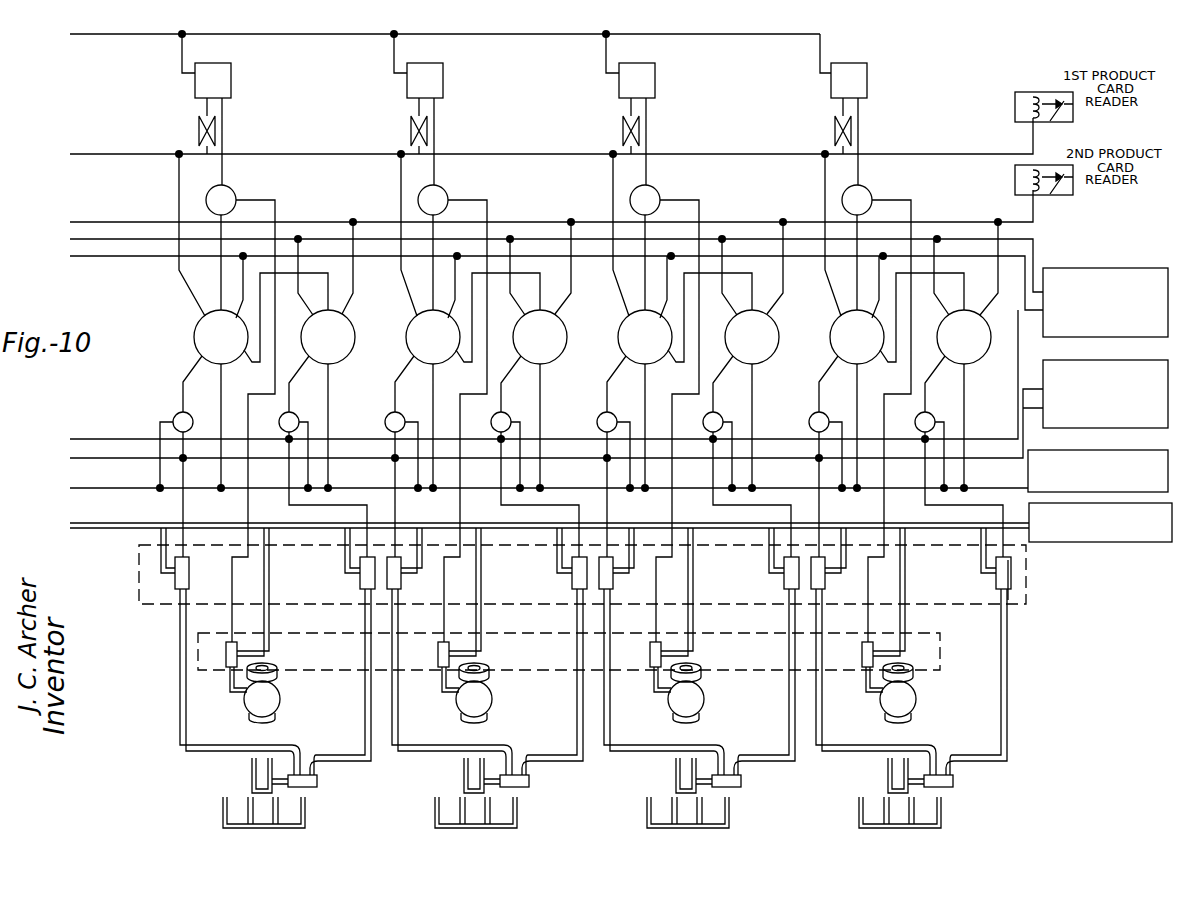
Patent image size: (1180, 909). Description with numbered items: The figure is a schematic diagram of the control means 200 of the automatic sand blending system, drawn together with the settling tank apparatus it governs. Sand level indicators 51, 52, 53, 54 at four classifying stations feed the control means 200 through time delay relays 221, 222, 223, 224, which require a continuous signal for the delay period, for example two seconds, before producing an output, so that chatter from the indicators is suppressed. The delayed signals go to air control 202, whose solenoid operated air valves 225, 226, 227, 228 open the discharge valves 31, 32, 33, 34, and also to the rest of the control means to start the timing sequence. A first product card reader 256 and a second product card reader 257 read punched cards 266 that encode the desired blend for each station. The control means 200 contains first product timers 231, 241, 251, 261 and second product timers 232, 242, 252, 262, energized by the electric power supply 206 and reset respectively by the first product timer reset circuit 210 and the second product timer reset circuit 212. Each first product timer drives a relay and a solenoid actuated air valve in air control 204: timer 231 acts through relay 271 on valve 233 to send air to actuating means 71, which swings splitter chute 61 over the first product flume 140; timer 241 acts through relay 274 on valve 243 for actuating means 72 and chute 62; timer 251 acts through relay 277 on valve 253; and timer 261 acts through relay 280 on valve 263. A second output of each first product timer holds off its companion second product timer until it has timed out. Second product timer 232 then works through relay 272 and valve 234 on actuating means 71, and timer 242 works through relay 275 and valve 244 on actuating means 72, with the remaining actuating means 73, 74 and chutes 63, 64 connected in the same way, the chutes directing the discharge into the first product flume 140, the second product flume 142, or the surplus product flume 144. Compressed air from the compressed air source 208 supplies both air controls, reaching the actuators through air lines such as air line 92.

The discharge valve 31 is at (915, 693).
The discharge valve 32 is at (702, 693).
The discharge valve 33 is at (490, 693).
The discharge valve 34 is at (272, 698).
The sand level indicator 51 is at (867, 80).
The sand level indicator 52 is at (655, 80).
The sand level indicator 53 is at (443, 80).
The sand level indicator 54 is at (222, 78).
The splitter chute 61 is at (883, 775).
The splitter chute 62 is at (669, 775).
The splitter chute 63 is at (457, 775).
The splitter chute 64 is at (252, 768).
The actuating means 71 is at (958, 779).
The actuating means 72 is at (743, 779).
The actuating means 73 is at (531, 779).
The actuating means 74 is at (317, 782).
The air line 92 is at (1024, 616).
The first product flume 140 is at (966, 803).
The second product flume 142 is at (958, 820).
The surplus product flume 144 is at (890, 803).
The control means 200 is at (180, 345).
The air control 202 is at (940, 658).
The air control 204 is at (1034, 597).
The electric power supply 206 is at (1118, 449).
The compressed air source 208 is at (1138, 543).
The first product timer reset circuit 210 is at (1118, 361).
The second product timer reset circuit 212 is at (1113, 267).
The time delay relay 221 is at (877, 195).
The time delay relay 222 is at (665, 195).
The time delay relay 223 is at (453, 195).
The time delay relay 224 is at (232, 192).
The solenoid operated air valve 225 is at (851, 670).
The solenoid operated air valve 226 is at (637, 670).
The solenoid operated air valve 227 is at (425, 670).
The solenoid operated air valve 228 is at (230, 642).
The first product timer 231 is at (835, 337).
The second product timer 232 is at (972, 345).
The solenoid actuated air valve 233 is at (836, 580).
The solenoid actuated air valve 234 is at (983, 578).
The first product timer 241 is at (622, 337).
The second product timer 242 is at (769, 331).
The solenoid actuated air valve 243 is at (623, 582).
The solenoid actuated air valve 244 is at (769, 577).
The first product timer 251 is at (411, 337).
The second product timer 252 is at (556, 331).
The solenoid actuated air valve 253 is at (411, 582).
The first product card reader 256 is at (1044, 83).
The second product card reader 257 is at (1015, 177).
The first product timer 261 is at (200, 331).
The second product timer 262 is at (349, 304).
The solenoid actuated air valve 263 is at (175, 580).
The punched card 266 is at (1065, 158).
The relay 271 is at (803, 410).
The relay 272 is at (959, 412).
The relay 274 is at (591, 414).
The relay 275 is at (749, 421).
The relay 277 is at (297, 417).
The relay 280 is at (176, 416).